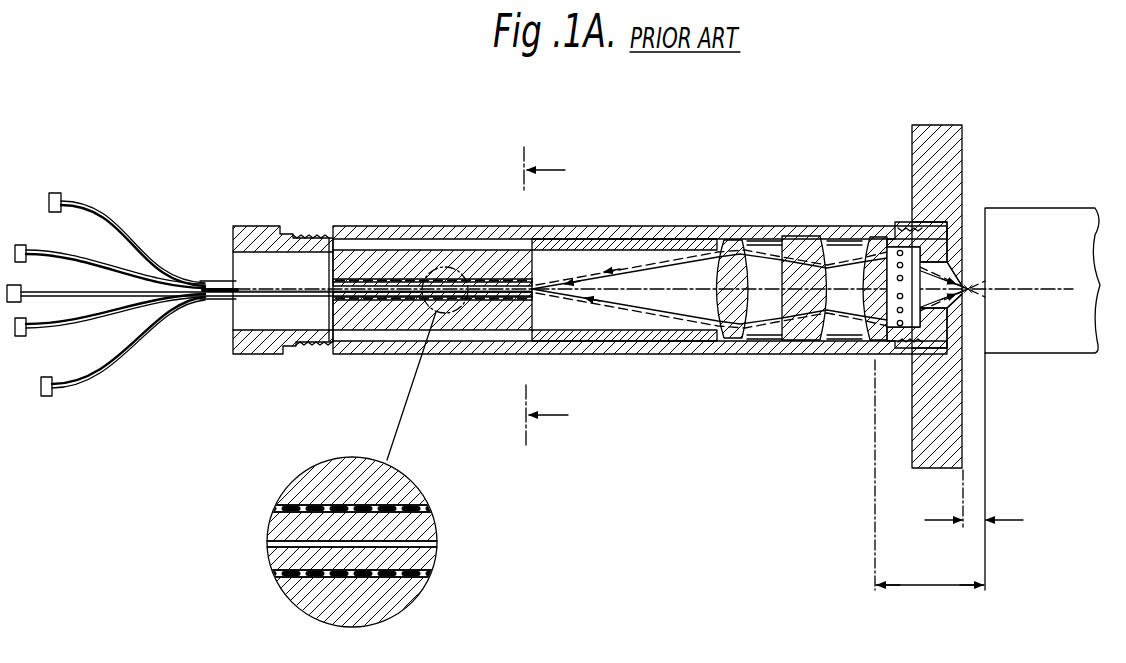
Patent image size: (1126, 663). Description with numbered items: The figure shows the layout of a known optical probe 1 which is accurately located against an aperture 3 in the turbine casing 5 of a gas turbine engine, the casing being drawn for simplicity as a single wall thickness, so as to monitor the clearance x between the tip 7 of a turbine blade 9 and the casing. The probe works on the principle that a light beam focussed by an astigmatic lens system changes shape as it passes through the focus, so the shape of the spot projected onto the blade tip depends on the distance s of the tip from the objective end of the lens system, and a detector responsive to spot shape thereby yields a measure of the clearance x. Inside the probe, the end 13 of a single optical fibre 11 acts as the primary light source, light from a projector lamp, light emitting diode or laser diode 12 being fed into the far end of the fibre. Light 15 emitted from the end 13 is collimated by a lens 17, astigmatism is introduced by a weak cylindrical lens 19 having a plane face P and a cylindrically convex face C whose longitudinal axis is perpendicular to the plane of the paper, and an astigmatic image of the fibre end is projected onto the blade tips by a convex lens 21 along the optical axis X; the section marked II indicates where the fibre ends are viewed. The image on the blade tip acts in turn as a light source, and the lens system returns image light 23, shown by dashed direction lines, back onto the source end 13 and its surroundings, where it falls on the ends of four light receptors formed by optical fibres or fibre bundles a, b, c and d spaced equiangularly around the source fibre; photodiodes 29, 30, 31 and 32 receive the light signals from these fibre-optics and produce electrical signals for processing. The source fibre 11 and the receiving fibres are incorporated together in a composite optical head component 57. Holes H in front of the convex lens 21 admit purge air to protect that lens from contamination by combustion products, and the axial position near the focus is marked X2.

The optical probe 1 is at (428, 190).
The aperture 3 is at (952, 264).
The turbine casing 5 is at (953, 137).
The tip of turbine blade 7 is at (976, 214).
The turbine blade 9 is at (1050, 217).
The optical fibre 11 is at (70, 294).
The projector lamp, light emitting diode, or laser diode 12 is at (21, 292).
The end of optical fibre 13 is at (530, 287).
The light 15 is at (566, 283).
The lens 17 is at (732, 237).
The weak cylindrical lens 19 is at (797, 238).
The convex lens 21 is at (871, 237).
The image light 23 is at (603, 270).
The photodiode 29 is at (22, 243).
The photodiode 30 is at (60, 194).
The photodiode 31 is at (22, 337).
The photodiode 32 is at (47, 397).
The composite optical head component 57 is at (512, 312).
The optical fibre or fibre bundle a is at (75, 262).
The optical fibre or fibre bundle b is at (143, 252).
The optical fibre or fibre bundle c is at (98, 317).
The optical fibre or fibre bundle d is at (142, 347).
The plane face P is at (771, 298).
The cylindrically convex face C is at (834, 294).
The holes H is at (902, 230).
The optical axis X is at (218, 296).
The axis position X2 is at (1062, 274).
The distance s is at (929, 475).
The clearance x is at (985, 518).
The section line II is at (555, 296).